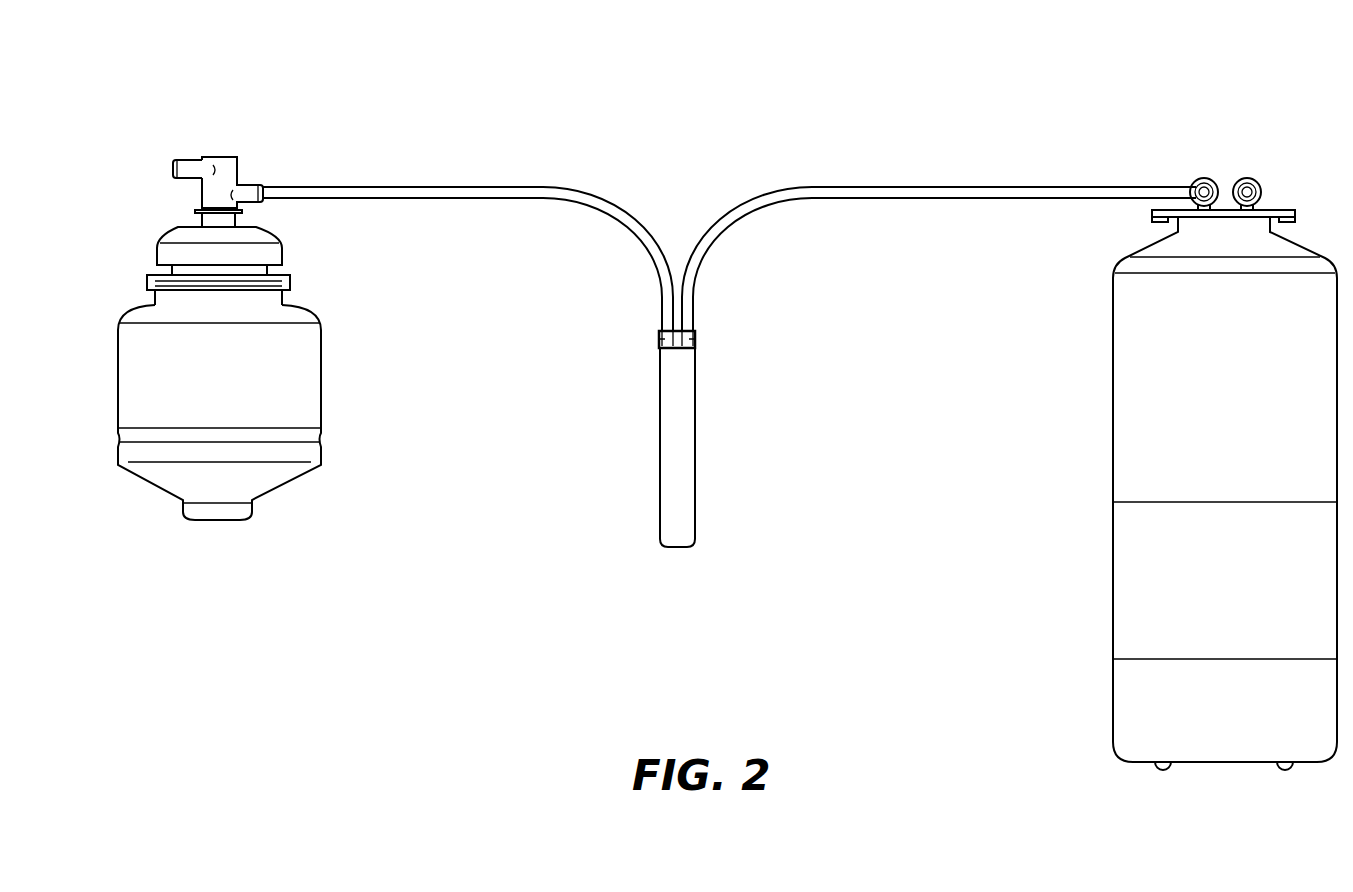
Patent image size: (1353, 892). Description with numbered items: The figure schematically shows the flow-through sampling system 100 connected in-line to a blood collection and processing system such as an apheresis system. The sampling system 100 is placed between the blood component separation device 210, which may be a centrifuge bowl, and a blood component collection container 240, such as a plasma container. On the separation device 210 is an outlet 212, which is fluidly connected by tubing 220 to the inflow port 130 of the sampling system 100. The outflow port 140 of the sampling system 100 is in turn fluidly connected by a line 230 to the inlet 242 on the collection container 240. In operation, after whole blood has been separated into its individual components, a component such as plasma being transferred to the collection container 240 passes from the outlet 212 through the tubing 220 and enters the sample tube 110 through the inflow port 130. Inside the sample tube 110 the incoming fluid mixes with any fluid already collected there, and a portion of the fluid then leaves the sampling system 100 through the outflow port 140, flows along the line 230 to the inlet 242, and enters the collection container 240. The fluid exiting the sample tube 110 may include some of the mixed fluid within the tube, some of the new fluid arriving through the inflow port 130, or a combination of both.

The sampling system 100 is at (634, 517).
The sample tube 110 is at (696, 448).
The inflow port 130 is at (659, 339).
The outflow port 140 is at (695, 339).
The blood component separation device 210 is at (240, 386).
The outlet 212 is at (247, 192).
The tubing 220 is at (428, 186).
The line 230 is at (940, 187).
The blood component collection container 240 is at (1248, 381).
The inlet 242 is at (1203, 186).